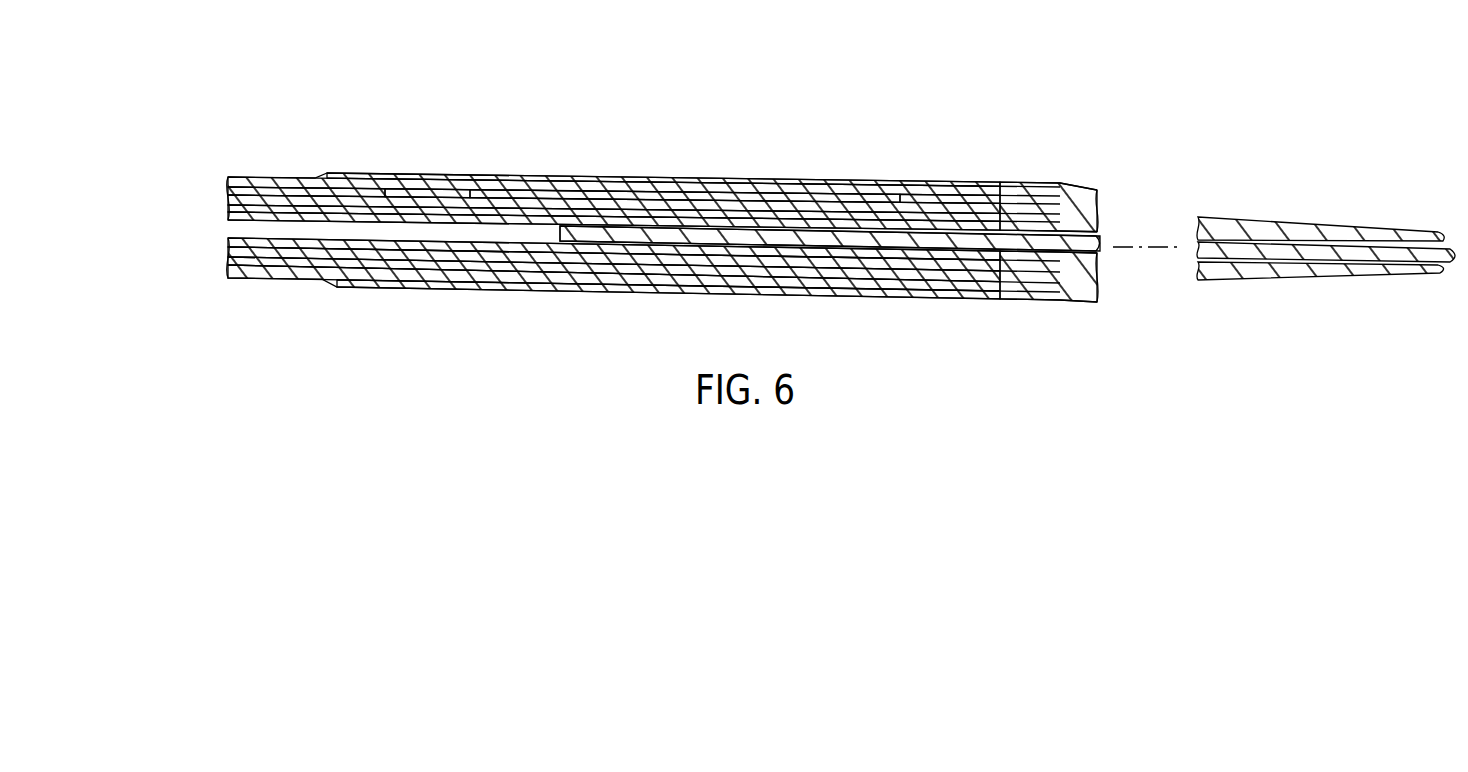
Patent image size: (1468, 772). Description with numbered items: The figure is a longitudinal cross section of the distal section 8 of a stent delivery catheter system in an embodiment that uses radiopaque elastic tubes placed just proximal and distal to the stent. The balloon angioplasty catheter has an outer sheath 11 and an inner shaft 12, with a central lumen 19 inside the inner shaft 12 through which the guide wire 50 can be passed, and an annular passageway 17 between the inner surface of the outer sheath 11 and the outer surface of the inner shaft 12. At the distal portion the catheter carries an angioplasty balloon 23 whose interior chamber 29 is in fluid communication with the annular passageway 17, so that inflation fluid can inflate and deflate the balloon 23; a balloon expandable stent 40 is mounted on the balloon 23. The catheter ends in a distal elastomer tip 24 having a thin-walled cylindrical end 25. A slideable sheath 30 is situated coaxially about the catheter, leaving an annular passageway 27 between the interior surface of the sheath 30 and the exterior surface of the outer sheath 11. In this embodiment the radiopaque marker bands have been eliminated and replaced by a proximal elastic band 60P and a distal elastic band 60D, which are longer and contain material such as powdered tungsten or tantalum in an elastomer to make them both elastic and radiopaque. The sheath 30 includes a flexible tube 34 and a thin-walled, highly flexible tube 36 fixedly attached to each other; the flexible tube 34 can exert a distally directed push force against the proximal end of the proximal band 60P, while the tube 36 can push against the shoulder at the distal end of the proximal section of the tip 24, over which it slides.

The distal section 8 is at (533, 62).
The flexible tube 34 is at (303, 177).
The thin-walled highly flexible tube 36 is at (382, 175).
The annular passageway 27 is at (228, 187).
The proximal elastic band 60P is at (448, 182).
The stent 40 is at (649, 197).
The distal elastic band 60D is at (940, 192).
The angioplasty balloon 23 is at (795, 198).
The annular passageway 17 is at (228, 217).
The distal elastomer tip 24 is at (1058, 187).
The interior chamber 29 is at (548, 262).
The central lumen 19 is at (228, 236).
The inner shaft 12 is at (258, 250).
The outer sheath 11 is at (292, 259).
The slideable sheath 30 is at (205, 281).
The thin-walled cylindrical end 25 is at (1378, 226).
The guide wire 50 is at (1463, 265).